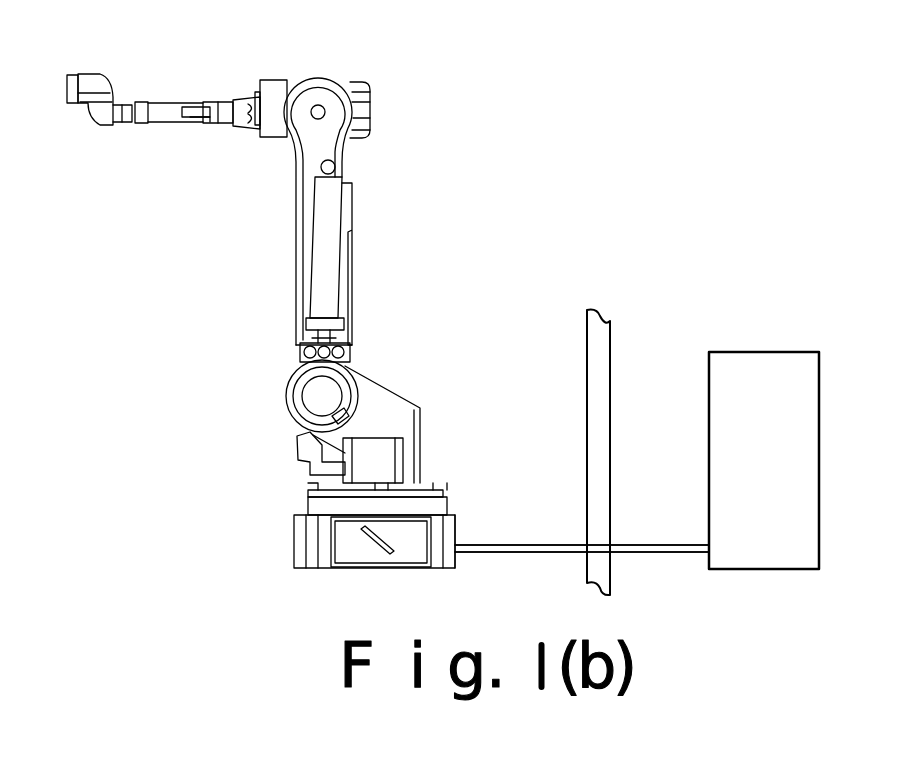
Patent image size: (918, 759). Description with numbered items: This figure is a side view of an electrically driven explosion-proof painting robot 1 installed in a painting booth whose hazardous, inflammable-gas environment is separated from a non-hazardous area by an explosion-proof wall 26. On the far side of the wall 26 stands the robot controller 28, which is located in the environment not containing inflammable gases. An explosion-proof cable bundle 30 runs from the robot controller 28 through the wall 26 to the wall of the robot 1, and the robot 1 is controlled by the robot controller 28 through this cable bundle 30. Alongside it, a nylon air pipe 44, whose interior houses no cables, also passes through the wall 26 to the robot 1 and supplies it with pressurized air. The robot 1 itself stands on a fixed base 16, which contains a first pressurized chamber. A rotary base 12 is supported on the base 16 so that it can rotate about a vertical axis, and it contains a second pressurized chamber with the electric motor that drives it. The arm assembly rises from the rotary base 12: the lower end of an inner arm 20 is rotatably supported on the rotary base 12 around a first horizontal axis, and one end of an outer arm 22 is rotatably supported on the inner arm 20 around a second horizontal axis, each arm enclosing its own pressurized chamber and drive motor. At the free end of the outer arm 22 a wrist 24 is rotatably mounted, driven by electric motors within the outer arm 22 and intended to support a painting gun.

The explosion-proof painting robot 1 is at (417, 224).
The rotary base 12 is at (396, 418).
The fixed base 16 is at (437, 486).
The inner arm 20 is at (313, 145).
The outer arm 22 is at (167, 103).
The wrist 24 is at (87, 80).
The explosion-proof wall 26 is at (602, 342).
The robot controller 28 is at (755, 378).
The explosion-proof cable bundle 30 is at (490, 542).
The air pipe 44 is at (581, 548).